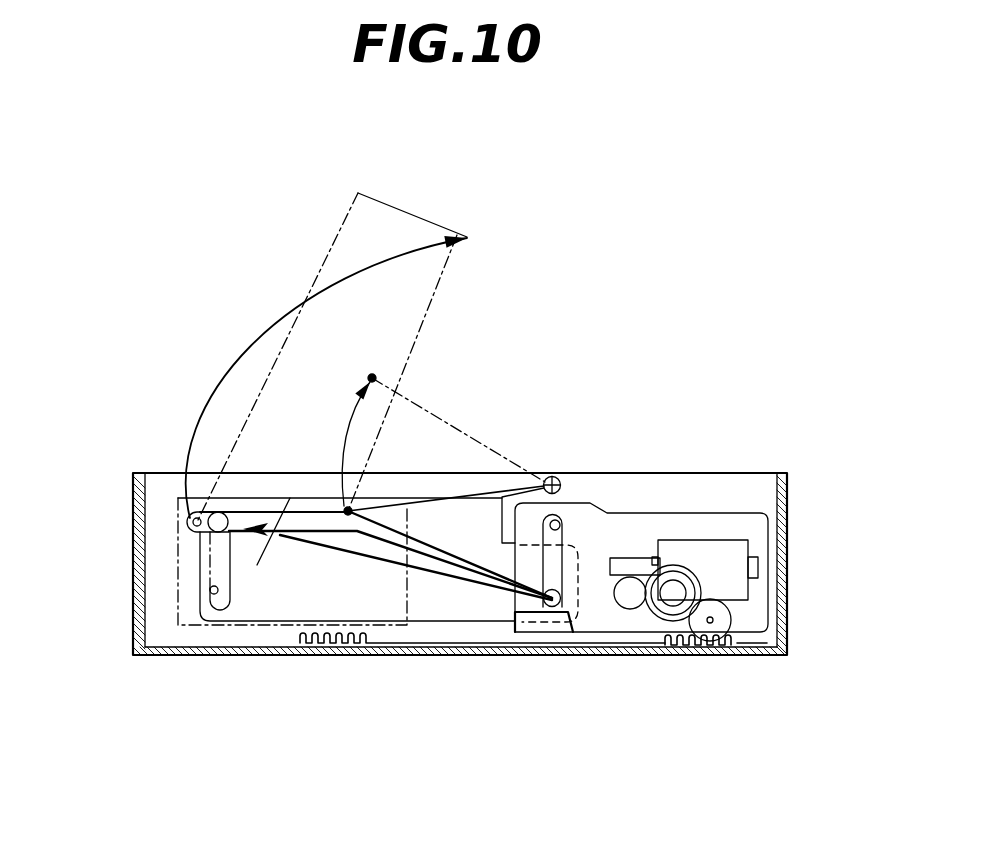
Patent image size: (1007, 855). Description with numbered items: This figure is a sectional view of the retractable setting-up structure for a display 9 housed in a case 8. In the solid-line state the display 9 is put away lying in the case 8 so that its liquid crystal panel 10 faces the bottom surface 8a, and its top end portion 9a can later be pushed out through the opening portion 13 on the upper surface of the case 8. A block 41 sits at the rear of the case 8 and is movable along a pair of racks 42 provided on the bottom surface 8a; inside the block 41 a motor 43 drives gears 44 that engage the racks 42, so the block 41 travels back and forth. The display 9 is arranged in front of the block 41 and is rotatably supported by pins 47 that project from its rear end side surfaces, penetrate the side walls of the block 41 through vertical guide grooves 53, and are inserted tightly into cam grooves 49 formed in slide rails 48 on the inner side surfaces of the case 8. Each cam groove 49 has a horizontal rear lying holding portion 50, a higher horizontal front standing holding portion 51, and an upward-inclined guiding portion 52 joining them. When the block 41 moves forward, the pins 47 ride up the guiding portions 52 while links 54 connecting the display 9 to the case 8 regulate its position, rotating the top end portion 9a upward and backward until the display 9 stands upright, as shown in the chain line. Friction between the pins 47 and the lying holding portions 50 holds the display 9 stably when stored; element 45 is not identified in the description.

The case 8 is at (788, 528).
The bottom surface 8a is at (233, 640).
The display 9 is at (430, 305).
The top end portion 9a is at (418, 214).
The liquid crystal panel 10 is at (305, 292).
The opening portion 13 is at (777, 492).
The block 41 is at (663, 522).
The rack 42 is at (676, 644).
The motor 43 is at (717, 540).
The gear 44 is at (722, 619).
The gear 45 is at (624, 600).
The pin 47 is at (210, 513).
The slide rail 48 is at (437, 560).
The cam groove 49 is at (487, 578).
The lying holding portion 50 is at (523, 635).
The standing holding portion 51 is at (330, 515).
The guiding portion 52 is at (450, 570).
The vertical guide groove 53 is at (560, 522).
The link 54 is at (412, 402).